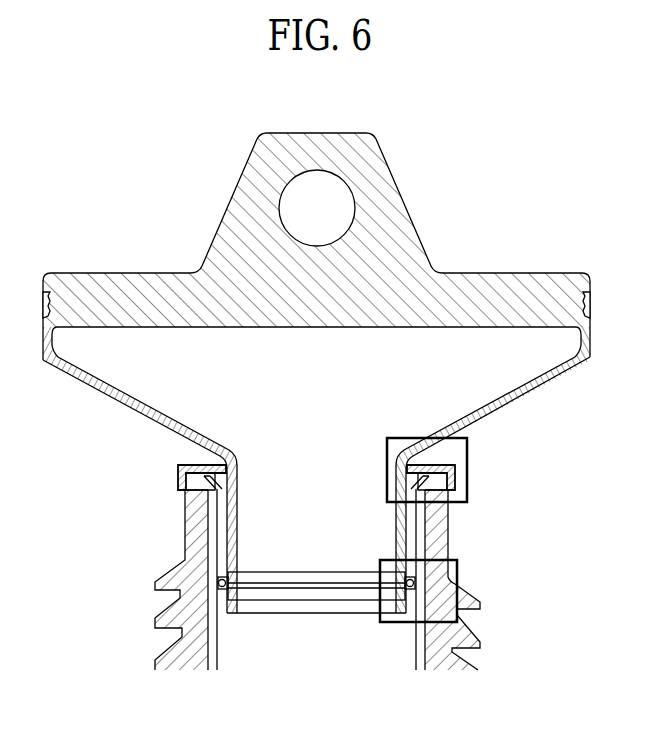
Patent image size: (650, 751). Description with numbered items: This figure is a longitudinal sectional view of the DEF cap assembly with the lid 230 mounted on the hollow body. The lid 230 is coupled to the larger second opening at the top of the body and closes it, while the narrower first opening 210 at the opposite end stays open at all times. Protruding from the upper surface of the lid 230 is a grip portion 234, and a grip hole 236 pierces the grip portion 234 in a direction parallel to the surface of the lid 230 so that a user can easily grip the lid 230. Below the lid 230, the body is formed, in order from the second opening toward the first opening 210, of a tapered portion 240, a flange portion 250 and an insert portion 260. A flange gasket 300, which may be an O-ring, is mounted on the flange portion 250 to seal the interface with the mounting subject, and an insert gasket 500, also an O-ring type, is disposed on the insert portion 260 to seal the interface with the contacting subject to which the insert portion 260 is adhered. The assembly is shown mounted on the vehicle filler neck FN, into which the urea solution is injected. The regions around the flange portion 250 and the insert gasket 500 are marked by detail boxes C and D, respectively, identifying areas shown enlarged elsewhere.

The first opening 210 is at (362, 592).
The lid 230 is at (320, 349).
The grip portion 234 is at (402, 228).
The grip hole 236 is at (320, 193).
The tapered portion 240 is at (549, 377).
The flange portion 250 is at (477, 466).
The insert portion 260 is at (402, 523).
The flange gasket 300 is at (178, 490).
The insert gasket 500 is at (220, 584).
The filler neck FN is at (460, 586).
The detail C is at (437, 466).
The detail D is at (431, 589).